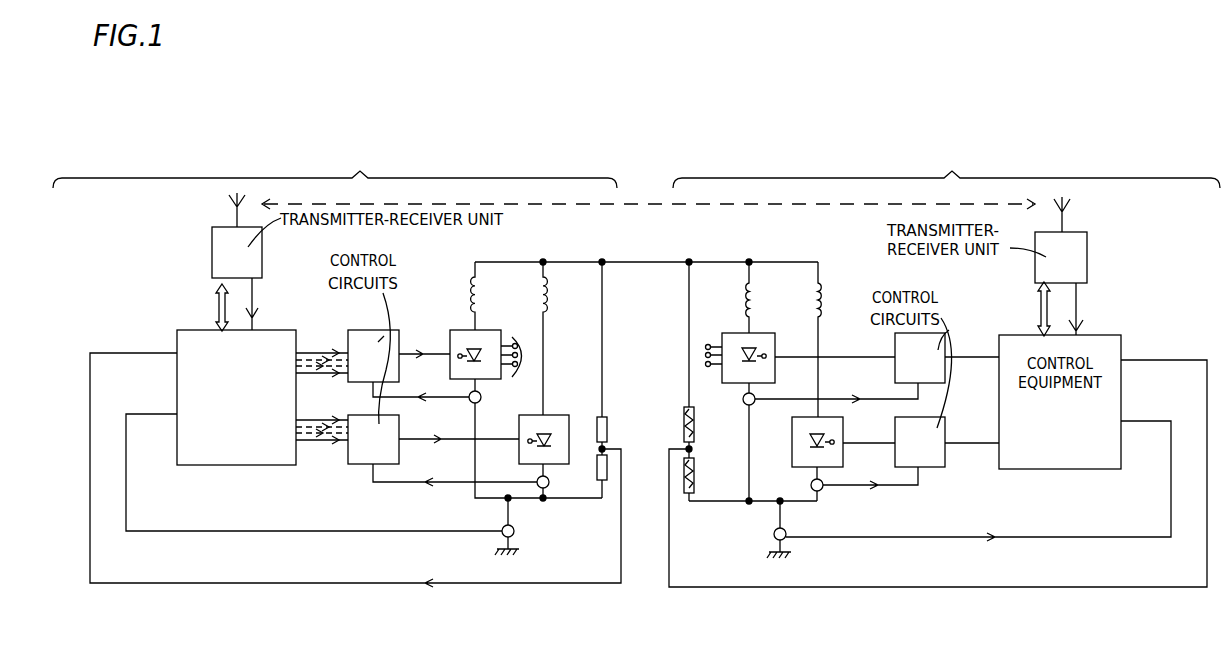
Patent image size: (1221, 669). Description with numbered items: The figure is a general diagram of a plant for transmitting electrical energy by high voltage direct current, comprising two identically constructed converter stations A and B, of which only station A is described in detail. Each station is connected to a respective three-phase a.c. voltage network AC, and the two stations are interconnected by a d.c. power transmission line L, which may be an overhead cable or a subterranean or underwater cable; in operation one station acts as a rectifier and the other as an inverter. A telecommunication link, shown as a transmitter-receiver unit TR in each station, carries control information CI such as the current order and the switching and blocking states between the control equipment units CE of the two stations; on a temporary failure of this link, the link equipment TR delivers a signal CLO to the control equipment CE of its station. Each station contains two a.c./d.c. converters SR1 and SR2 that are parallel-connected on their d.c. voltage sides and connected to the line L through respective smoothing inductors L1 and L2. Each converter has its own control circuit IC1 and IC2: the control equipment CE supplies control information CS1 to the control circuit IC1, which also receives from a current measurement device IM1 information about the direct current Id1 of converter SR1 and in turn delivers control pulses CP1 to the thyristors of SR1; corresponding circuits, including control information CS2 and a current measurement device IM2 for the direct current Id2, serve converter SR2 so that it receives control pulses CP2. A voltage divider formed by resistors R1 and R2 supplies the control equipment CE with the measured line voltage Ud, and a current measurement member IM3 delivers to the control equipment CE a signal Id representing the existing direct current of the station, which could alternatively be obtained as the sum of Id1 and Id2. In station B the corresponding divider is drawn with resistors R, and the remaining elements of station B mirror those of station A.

The converter station A is at (335, 169).
The converter station B is at (946, 169).
The transmitter-receiver unit TR is at (253, 260).
The control information CI is at (215, 307).
The communication failure signal CLO is at (269, 304).
The control equipment CE is at (236, 397).
The control information CS1 is at (327, 352).
The control information CS2 is at (320, 441).
The control circuit IC1 is at (373, 356).
The control circuit IC2 is at (373, 439).
The control pulses CP1 is at (424, 344).
The control pulses CP2 is at (459, 429).
The direct current of converter SR1 Id1 is at (421, 385).
The direct current of converter SR2 Id2 is at (455, 470).
The station direct current signal Id is at (314, 472).
The measured line voltage Ud is at (355, 485).
The smoothing inductor L1 is at (471, 297).
The smoothing inductor L2 is at (546, 307).
The d.c. power transmission line L is at (660, 262).
The a.c./d.c. converter SR1 is at (485, 338).
The a.c./d.c. converter SR2 is at (556, 422).
The three-phase a.c. voltage network AC is at (522, 355).
The current measurement device IM1 is at (482, 397).
The current measurement device IM2 is at (550, 482).
The current measurement member IM3 is at (515, 531).
The resistor R1 is at (608, 432).
The resistor R2 is at (604, 481).
The resistor R is at (697, 381).